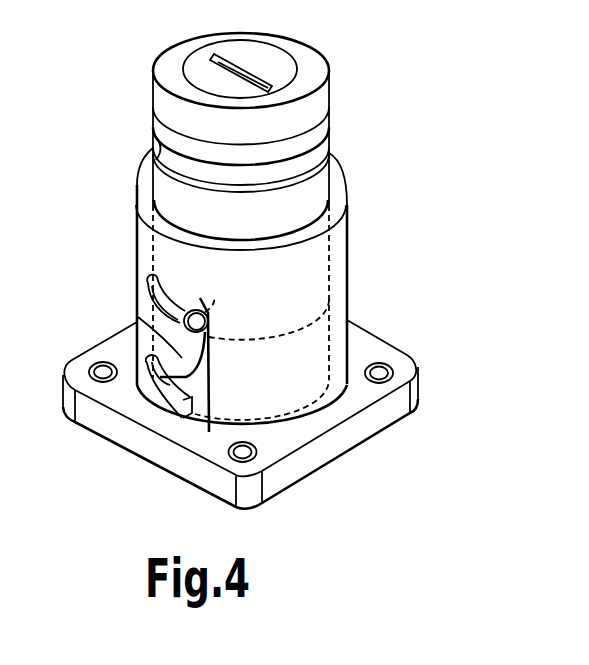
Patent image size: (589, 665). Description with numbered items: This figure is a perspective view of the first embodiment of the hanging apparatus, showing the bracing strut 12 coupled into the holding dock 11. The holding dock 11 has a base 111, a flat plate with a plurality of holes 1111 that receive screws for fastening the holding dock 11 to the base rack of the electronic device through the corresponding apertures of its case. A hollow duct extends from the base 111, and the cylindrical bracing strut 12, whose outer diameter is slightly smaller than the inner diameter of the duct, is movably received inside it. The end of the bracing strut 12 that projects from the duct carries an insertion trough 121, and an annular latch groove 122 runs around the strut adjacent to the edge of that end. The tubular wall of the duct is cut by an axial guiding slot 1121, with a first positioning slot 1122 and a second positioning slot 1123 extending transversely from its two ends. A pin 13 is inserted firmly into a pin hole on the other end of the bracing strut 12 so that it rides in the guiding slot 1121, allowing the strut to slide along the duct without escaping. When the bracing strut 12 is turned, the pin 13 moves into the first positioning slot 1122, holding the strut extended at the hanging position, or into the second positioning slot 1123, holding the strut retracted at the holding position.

The holding dock 11 is at (347, 277).
The base 111 is at (303, 427).
The holes 1111 is at (381, 367).
The guiding slot 1121 is at (152, 312).
The first positioning slot 1122 is at (150, 289).
The second positioning slot 1123 is at (150, 380).
The bracing strut 12 is at (331, 141).
The insertion trough 121 is at (250, 77).
The annular latch groove 122 is at (177, 160).
The pin 13 is at (138, 317).